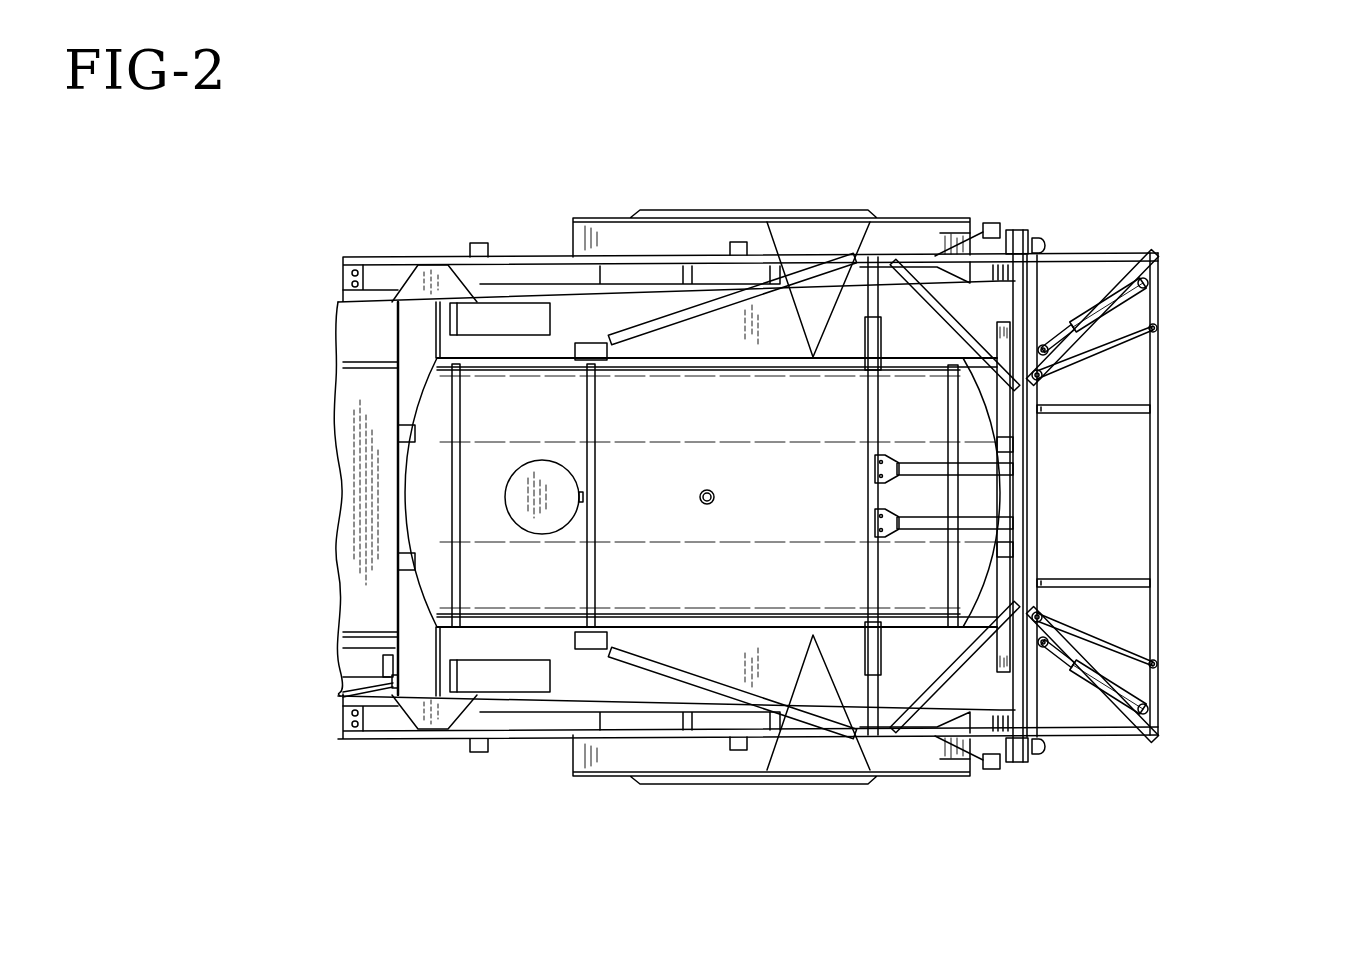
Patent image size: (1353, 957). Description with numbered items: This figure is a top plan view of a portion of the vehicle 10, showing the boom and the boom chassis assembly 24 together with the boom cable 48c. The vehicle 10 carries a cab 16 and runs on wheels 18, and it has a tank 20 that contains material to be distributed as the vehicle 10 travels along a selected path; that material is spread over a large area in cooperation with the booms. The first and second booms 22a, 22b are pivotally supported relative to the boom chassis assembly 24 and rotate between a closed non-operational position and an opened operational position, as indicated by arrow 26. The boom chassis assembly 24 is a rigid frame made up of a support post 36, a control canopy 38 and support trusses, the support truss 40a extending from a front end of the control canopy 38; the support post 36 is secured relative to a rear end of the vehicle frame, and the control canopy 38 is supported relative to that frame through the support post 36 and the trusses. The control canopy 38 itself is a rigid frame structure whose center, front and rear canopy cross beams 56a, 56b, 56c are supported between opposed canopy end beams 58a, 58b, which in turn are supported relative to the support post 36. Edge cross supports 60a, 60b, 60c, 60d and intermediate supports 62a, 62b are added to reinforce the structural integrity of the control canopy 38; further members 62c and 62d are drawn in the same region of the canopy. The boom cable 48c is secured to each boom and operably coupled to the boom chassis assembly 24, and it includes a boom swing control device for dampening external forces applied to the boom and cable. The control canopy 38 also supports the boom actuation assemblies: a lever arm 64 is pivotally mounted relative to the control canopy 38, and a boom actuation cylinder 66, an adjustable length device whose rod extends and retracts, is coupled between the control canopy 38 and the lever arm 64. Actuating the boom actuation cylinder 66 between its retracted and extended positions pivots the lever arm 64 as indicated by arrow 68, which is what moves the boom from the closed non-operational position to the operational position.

The vehicle 10 is at (334, 213).
The cab 16 is at (328, 485).
The wheels 18 is at (740, 215).
The tank 20 is at (664, 475).
The first boom 22a is at (519, 729).
The second boom 22b is at (516, 226).
The boom chassis assembly 24 is at (1084, 230).
The arrow 26 is at (394, 331).
The support post 36 is at (1017, 248).
The control canopy 38 is at (893, 250).
The support truss 40a is at (663, 322).
The boom cable 48c is at (1127, 342).
The center canopy cross beam 56a is at (868, 405).
The front canopy cross beam 56b is at (1150, 510).
The rear canopy cross beam 56c is at (1158, 468).
The canopy end beam 58a is at (1070, 742).
The canopy end beam 58b is at (942, 252).
The edge cross support 60a is at (945, 288).
The edge cross support 60b is at (945, 705).
The edge cross support 60c is at (1100, 283).
The edge cross support 60d is at (1100, 705).
The intermediate support 62a is at (926, 532).
The intermediate support 62b is at (926, 460).
The lower cross bar 62c is at (1115, 583).
The upper cross bar 62d is at (1115, 405).
The lever arm 64 is at (1050, 335).
The boom actuation cylinder 66 is at (1153, 253).
The arrow 68 is at (990, 436).